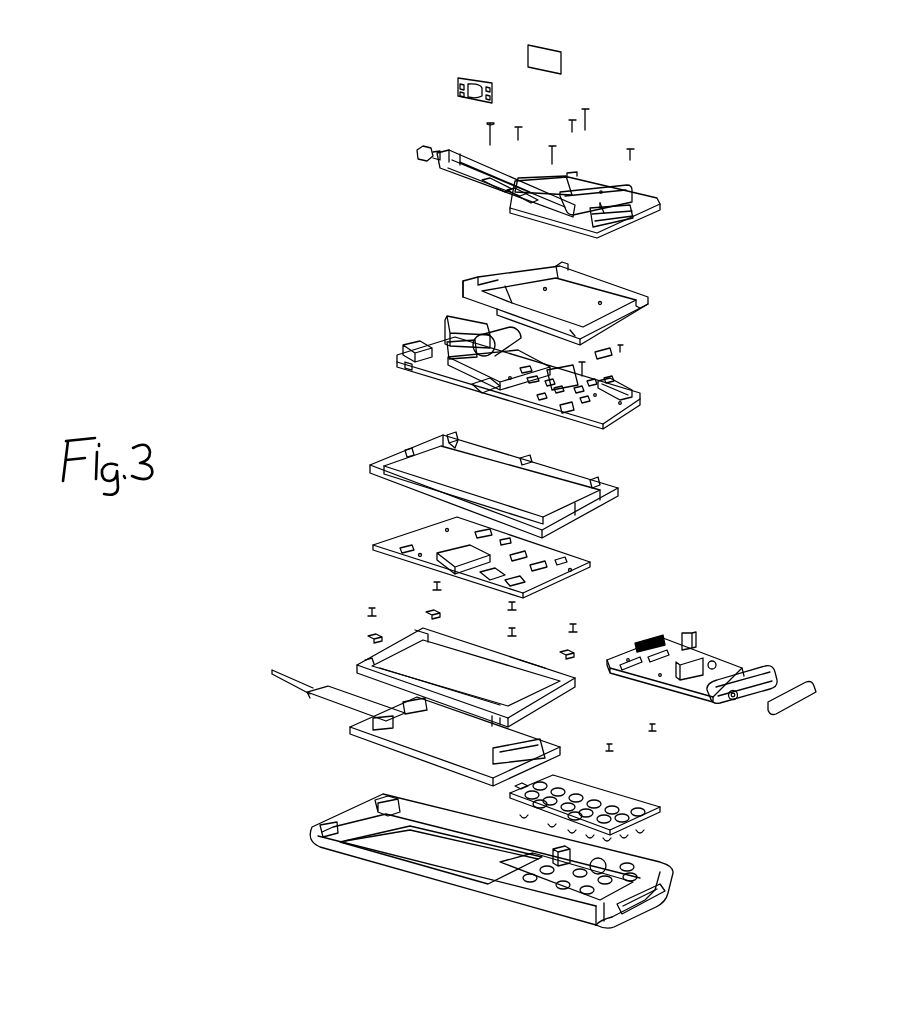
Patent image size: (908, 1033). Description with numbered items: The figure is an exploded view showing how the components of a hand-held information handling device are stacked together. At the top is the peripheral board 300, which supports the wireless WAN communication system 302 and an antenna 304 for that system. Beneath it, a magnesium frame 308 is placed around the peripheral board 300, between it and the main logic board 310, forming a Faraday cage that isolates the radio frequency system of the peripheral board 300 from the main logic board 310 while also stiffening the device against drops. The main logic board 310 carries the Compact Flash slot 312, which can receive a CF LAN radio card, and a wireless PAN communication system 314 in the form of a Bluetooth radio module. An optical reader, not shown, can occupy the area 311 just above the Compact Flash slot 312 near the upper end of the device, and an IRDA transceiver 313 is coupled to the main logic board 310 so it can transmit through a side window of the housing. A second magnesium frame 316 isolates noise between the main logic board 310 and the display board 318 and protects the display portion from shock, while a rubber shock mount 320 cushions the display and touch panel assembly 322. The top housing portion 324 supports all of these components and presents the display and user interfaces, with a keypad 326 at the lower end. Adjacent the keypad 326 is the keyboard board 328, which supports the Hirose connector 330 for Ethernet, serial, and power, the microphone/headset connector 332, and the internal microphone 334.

The peripheral board 300 is at (645, 195).
The wireless WAN communication system 302 is at (600, 222).
The antenna 304 is at (441, 162).
The magnesium frame 308 is at (648, 304).
The main logic board 310 is at (636, 395).
The area for optical reader 311 is at (447, 338).
The Compact Flash slot 312 is at (530, 362).
The IRDA transceiver 313 is at (483, 400).
The wireless PAN communication system 314 is at (398, 358).
The second magnesium frame 316 is at (620, 491).
The display board 318 is at (590, 563).
The rubber shock mount 320 is at (568, 690).
The display and touch panel assembly 322 is at (355, 733).
The top housing portion 324 is at (677, 874).
The keypad 326 is at (667, 807).
The keyboard board 328 is at (717, 651).
The Hirose connector 330 is at (752, 696).
The microphone/headset connector 332 is at (736, 703).
The internal microphone 334 is at (777, 676).